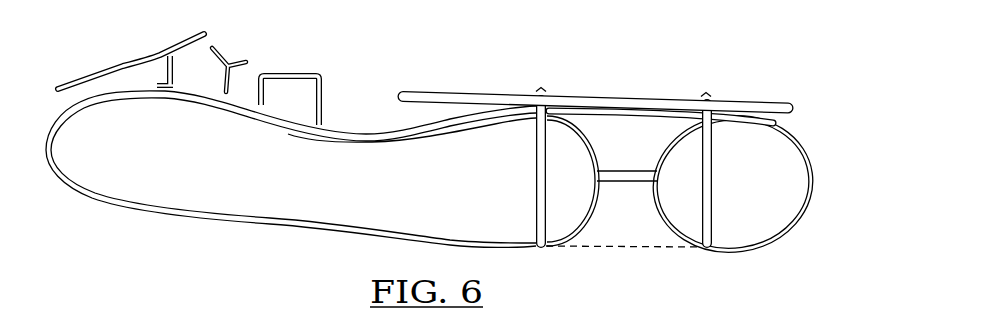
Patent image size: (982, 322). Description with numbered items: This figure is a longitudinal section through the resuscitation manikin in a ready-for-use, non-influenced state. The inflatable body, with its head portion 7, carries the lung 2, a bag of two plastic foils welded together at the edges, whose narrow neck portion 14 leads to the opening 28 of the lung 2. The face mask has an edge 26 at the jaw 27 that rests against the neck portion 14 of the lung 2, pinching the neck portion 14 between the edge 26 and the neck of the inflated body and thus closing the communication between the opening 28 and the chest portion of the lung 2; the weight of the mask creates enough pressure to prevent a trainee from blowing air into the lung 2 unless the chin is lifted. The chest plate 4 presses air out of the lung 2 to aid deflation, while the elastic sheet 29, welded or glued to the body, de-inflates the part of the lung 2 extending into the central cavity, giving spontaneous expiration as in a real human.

The lung 2 is at (775, 125).
The chest plate 4 is at (753, 102).
The head portion 7 is at (750, 218).
The neck portion 14 is at (375, 127).
The edge 26 is at (317, 127).
The jaw 27 is at (307, 72).
The opening 28 is at (205, 50).
The elastic sheet of material 29 is at (627, 175).